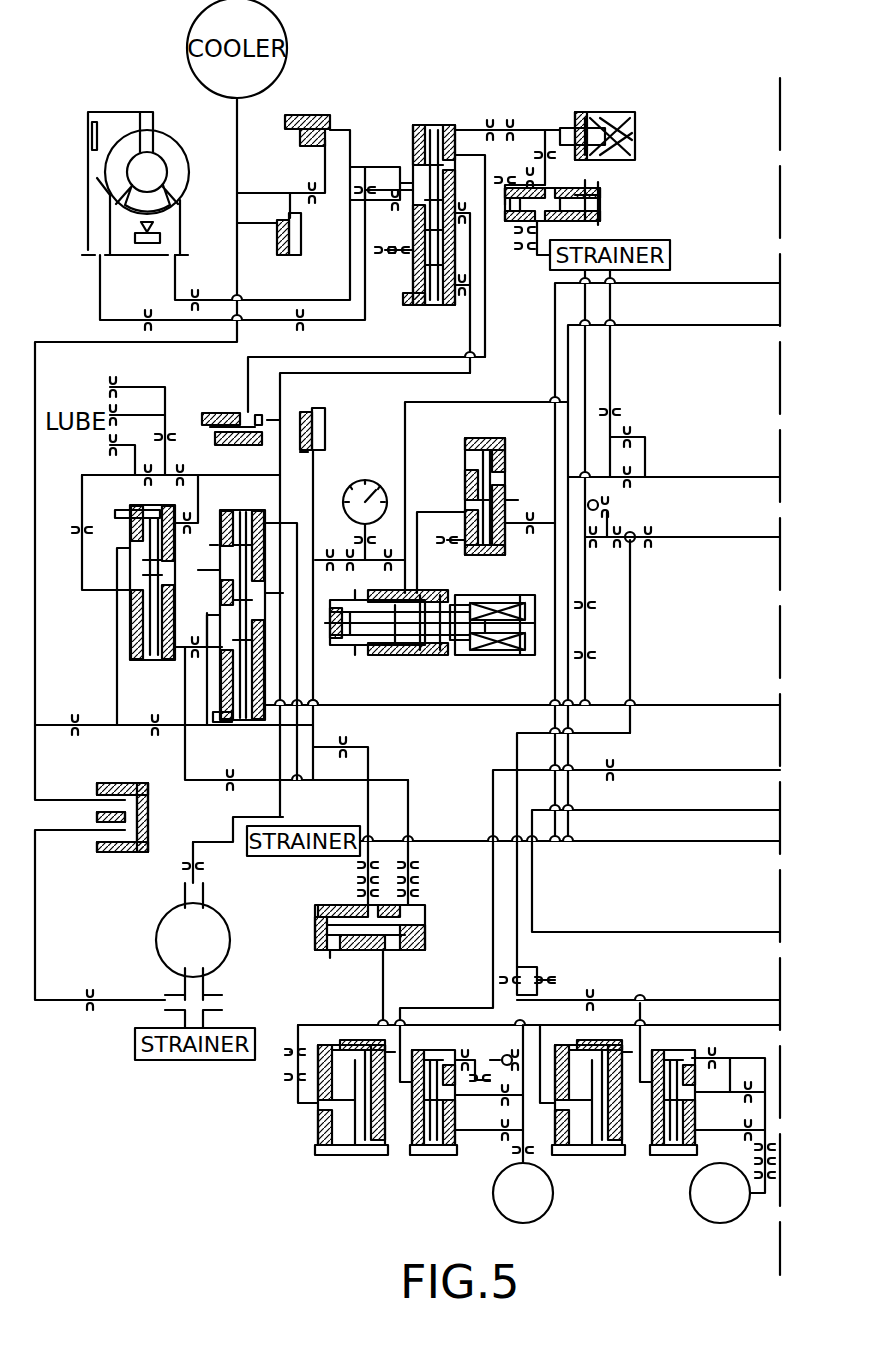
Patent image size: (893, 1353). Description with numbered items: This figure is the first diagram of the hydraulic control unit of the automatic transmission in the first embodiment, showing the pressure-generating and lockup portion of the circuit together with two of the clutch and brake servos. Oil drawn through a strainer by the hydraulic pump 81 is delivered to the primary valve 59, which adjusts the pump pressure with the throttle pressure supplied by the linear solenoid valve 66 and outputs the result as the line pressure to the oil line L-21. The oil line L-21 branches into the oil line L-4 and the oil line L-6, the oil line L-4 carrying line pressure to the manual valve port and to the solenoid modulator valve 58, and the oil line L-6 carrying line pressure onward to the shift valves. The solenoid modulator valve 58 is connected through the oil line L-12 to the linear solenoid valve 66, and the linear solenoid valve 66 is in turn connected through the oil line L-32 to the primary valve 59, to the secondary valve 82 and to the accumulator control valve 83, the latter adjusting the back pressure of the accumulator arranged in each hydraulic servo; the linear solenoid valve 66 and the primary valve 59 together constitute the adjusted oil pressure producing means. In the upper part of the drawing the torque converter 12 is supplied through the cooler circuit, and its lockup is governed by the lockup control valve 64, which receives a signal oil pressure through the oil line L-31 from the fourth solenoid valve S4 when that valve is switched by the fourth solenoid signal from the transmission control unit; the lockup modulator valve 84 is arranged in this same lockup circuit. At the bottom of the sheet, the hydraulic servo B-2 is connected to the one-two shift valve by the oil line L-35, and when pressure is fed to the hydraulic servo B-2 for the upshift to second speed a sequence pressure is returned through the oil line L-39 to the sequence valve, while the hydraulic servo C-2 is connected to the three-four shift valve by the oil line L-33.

The torque converter 12 is at (145, 112).
The lockup control valve 64 is at (432, 125).
The oil line L-31 is at (540, 130).
The fourth solenoid valve S4 is at (615, 112).
The lockup modulator valve 84 is at (600, 203).
The oil line L-35 is at (685, 477).
The oil line L-4 is at (553, 637).
The oil line L-33 is at (632, 676).
The secondary valve 82 is at (145, 665).
The primary valve 59 is at (250, 522).
The oil line L-12 is at (428, 512).
The solenoid modulator valve 58 is at (492, 430).
The linear solenoid valve 66 is at (485, 590).
The oil line L-32 is at (313, 675).
The hydraulic pump 81 is at (227, 913).
The oil line L-21 is at (447, 840).
The accumulator control valve 83 is at (425, 922).
The oil line L-6 is at (660, 845).
The oil line L-39 is at (697, 1012).
The hydraulic servo B-2 is at (419, 1124).
The hydraulic servo C-2 is at (657, 1124).